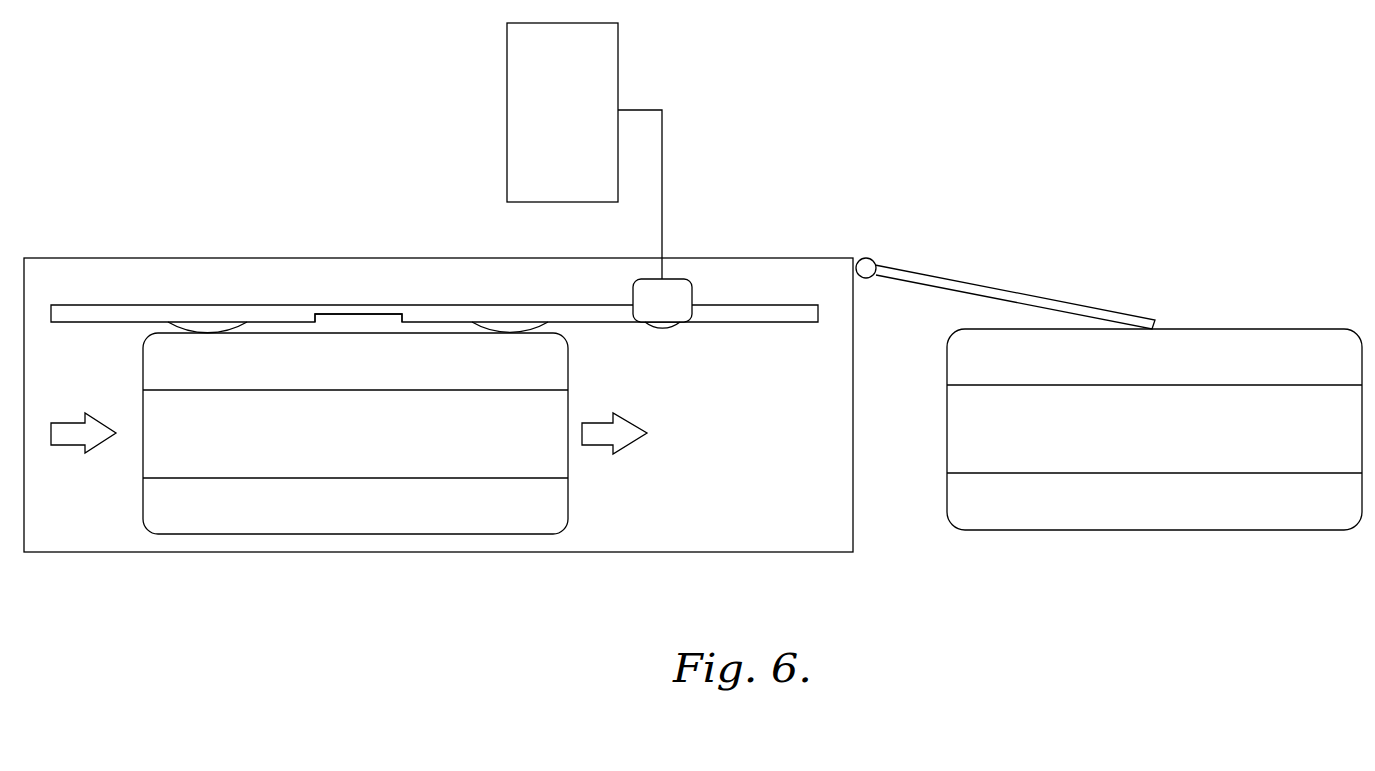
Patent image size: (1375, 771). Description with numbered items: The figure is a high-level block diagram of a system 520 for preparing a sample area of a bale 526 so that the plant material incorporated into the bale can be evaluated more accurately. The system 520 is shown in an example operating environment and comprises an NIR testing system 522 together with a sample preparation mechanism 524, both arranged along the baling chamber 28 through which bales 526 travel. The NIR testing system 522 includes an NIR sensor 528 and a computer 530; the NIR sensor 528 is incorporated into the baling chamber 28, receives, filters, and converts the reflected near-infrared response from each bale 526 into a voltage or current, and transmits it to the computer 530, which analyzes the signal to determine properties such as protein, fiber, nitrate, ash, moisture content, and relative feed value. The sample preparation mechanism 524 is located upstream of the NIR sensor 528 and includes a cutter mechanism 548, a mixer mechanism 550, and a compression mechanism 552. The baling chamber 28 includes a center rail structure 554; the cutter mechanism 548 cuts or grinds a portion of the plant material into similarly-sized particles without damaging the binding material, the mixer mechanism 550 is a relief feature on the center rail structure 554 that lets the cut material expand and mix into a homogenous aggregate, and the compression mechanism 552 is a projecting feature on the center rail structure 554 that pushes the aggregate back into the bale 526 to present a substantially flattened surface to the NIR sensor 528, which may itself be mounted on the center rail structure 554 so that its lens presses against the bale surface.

The baling chamber 28 is at (807, 560).
The system 520 is at (277, 135).
The NIR testing system 522 is at (688, 273).
The sample preparation mechanism 524 is at (135, 334).
The bale 526 is at (505, 521).
The NIR sensor 528 is at (670, 335).
The computer 530 is at (601, 42).
The cutter mechanism 548 is at (203, 340).
The mixer mechanism 550 is at (355, 321).
The compression mechanism 552 is at (510, 340).
The center rail structure 554 is at (85, 317).